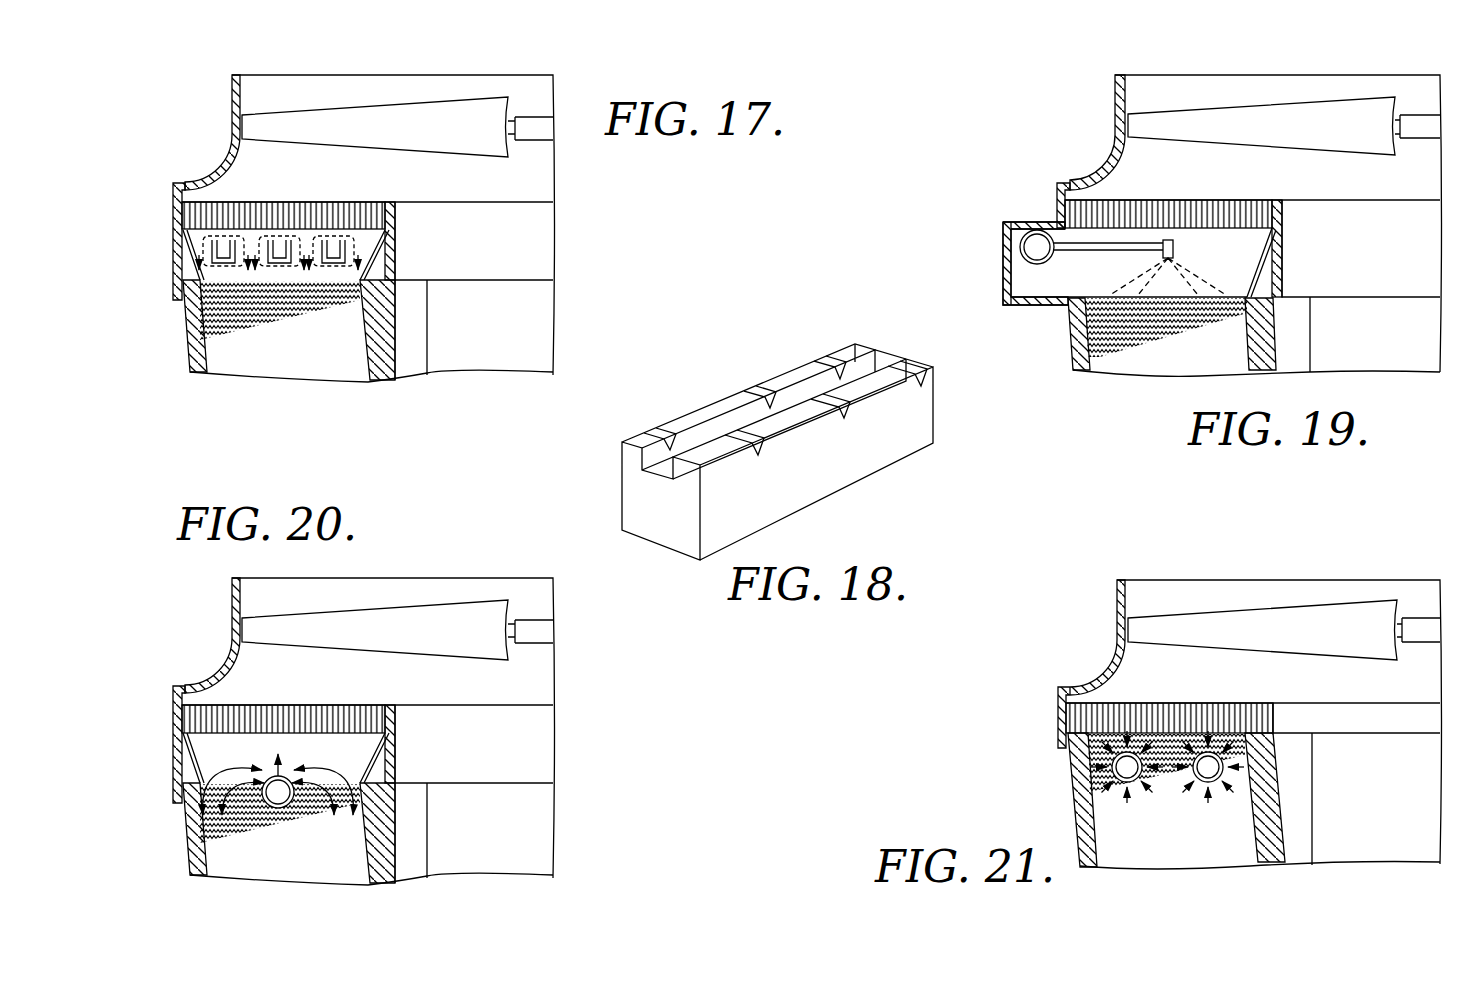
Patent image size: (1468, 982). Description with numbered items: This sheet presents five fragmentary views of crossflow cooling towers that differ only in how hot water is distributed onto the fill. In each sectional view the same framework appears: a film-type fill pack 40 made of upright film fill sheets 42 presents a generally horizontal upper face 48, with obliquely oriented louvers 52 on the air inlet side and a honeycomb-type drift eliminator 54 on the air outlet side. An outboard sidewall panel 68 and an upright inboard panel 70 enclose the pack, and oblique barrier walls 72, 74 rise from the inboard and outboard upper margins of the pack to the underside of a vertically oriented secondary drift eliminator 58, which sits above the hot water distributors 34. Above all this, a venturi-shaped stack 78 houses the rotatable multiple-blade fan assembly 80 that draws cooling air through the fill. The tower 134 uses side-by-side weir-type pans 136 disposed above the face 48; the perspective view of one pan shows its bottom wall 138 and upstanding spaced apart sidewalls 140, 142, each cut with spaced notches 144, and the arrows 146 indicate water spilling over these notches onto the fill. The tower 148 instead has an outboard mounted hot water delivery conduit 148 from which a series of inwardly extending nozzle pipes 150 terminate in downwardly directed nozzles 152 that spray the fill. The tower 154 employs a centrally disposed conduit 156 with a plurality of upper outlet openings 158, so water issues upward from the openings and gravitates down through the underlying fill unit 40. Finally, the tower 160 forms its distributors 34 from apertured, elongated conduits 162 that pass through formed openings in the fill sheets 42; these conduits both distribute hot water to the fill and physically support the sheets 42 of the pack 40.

In FIG. 21, the hot water distributor 34 is at (1170, 798).
In FIG. 17, the film-type fill pack 40 is at (293, 380).
In FIG. 20, the film-type fill pack 40 is at (322, 887).
In FIG. 21, the film-type fill pack 40 is at (1150, 872).
In FIG. 21, the film fill sheet 42 is at (1190, 857).
In FIG. 17, the upper face 48 is at (290, 287).
In FIG. 17, the louver 52 is at (193, 360).
In FIG. 20, the louver 52 is at (193, 860).
In FIG. 19, the louver 52 is at (1070, 343).
In FIG. 21, the louver 52 is at (1077, 817).
In FIG. 20, the drift eliminator 54 is at (390, 864).
In FIG. 19, the drift eliminator 54 is at (1273, 354).
In FIG. 21, the drift eliminator 54 is at (1277, 820).
In FIG. 19, the secondary drift eliminator 58 is at (1250, 207).
In FIG. 21, the secondary drift eliminator 58 is at (1234, 710).
In FIG. 17, the outboard sidewall panel 68 is at (388, 223).
In FIG. 20, the outboard sidewall panel 68 is at (395, 764).
In FIG. 19, the outboard sidewall panel 68 is at (1282, 227).
In FIG. 17, the inboard panel 70 is at (175, 264).
In FIG. 20, the inboard panel 70 is at (175, 803).
In FIG. 19, the inboard panel 70 is at (1005, 265).
In FIG. 17, the barrier wall 72 is at (378, 258).
In FIG. 20, the barrier wall 72 is at (368, 790).
In FIG. 19, the barrier wall 72 is at (1262, 261).
In FIG. 17, the exterior barrier wall 74 is at (200, 245).
In FIG. 20, the exterior barrier wall 74 is at (193, 792).
In FIG. 17, the venturi-shaped stack 78 is at (236, 97).
In FIG. 20, the venturi-shaped stack 78 is at (240, 620).
In FIG. 19, the venturi-shaped stack 78 is at (1118, 112).
In FIG. 21, the venturi-shaped stack 78 is at (1118, 617).
In FIG. 17, the fan assembly 80 is at (465, 148).
In FIG. 20, the fan assembly 80 is at (465, 603).
In FIG. 19, the fan assembly 80 is at (1282, 115).
In FIG. 21, the fan assembly 80 is at (1340, 607).
In FIG. 17, the tower 134 is at (578, 226).
In FIG. 17, the weir-type pan 136 is at (250, 230).
In FIG. 18, the weir-type pan 136 is at (803, 352).
In FIG. 17, the bottom wall 138 is at (323, 265).
In FIG. 18, the sidewall 140 is at (923, 415).
In FIG. 18, the sidewall 142 is at (715, 409).
In FIG. 18, the notch 144 is at (822, 429).
In FIG. 17, the arrows 146 is at (360, 242).
In FIG. 19, the hot water delivery conduit 148 is at (1040, 134).
In FIG. 19, the nozzle pipe 150 is at (1125, 249).
In FIG. 19, the nozzle 152 is at (1176, 252).
In FIG. 20, the tower 154 is at (578, 668).
In FIG. 20, the conduit 156 is at (293, 807).
In FIG. 20, the upper outlet opening 158 is at (310, 759).
In FIG. 21, the tower 160 is at (1168, 553).
In FIG. 21, the apertured elongated conduit 162 is at (1133, 785).